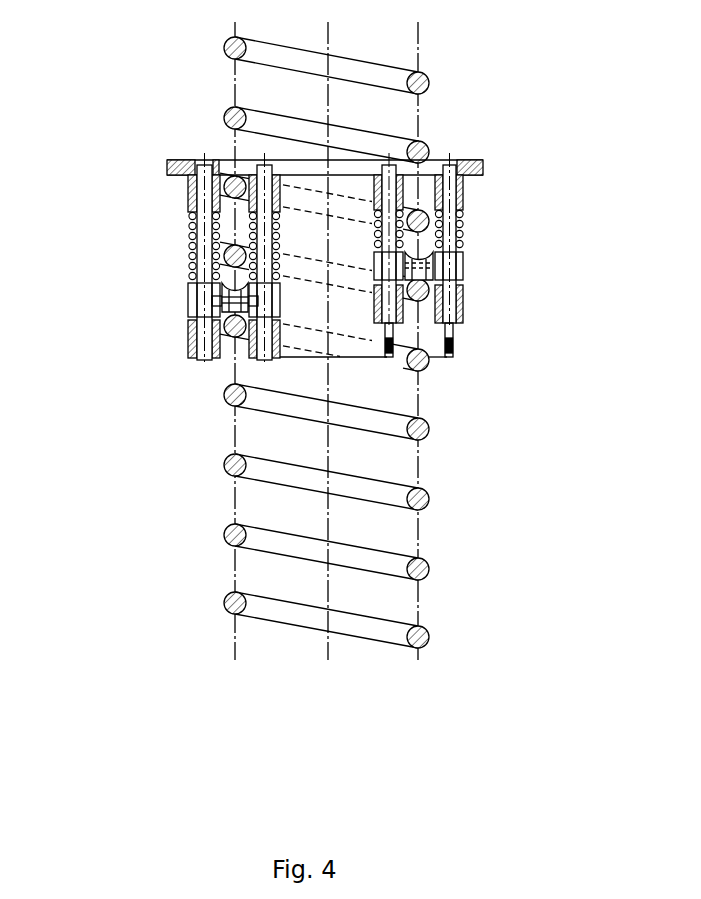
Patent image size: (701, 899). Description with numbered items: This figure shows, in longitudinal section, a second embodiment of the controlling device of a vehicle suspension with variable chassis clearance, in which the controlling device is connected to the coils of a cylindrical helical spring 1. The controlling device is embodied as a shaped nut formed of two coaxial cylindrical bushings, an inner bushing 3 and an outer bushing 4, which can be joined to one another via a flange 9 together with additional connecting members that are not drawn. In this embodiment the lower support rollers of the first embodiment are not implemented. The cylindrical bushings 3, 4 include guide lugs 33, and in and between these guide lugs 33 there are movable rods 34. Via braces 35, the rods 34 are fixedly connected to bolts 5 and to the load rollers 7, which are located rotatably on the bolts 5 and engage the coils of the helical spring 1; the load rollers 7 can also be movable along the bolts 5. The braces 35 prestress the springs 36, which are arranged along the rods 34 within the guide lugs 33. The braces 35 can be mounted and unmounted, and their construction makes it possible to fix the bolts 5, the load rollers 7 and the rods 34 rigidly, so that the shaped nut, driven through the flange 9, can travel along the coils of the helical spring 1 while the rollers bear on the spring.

The cylindrical helical spring 1 is at (420, 567).
The inner bushing 3 is at (448, 348).
The outer bushing 4 is at (390, 352).
The bolts 5 is at (215, 302).
The load rollers 7 is at (223, 313).
The flange 9 is at (622, 123).
The guide lugs 33 is at (458, 195).
The rods 34 is at (203, 198).
The braces 35 is at (193, 309).
The springs 36 is at (458, 240).